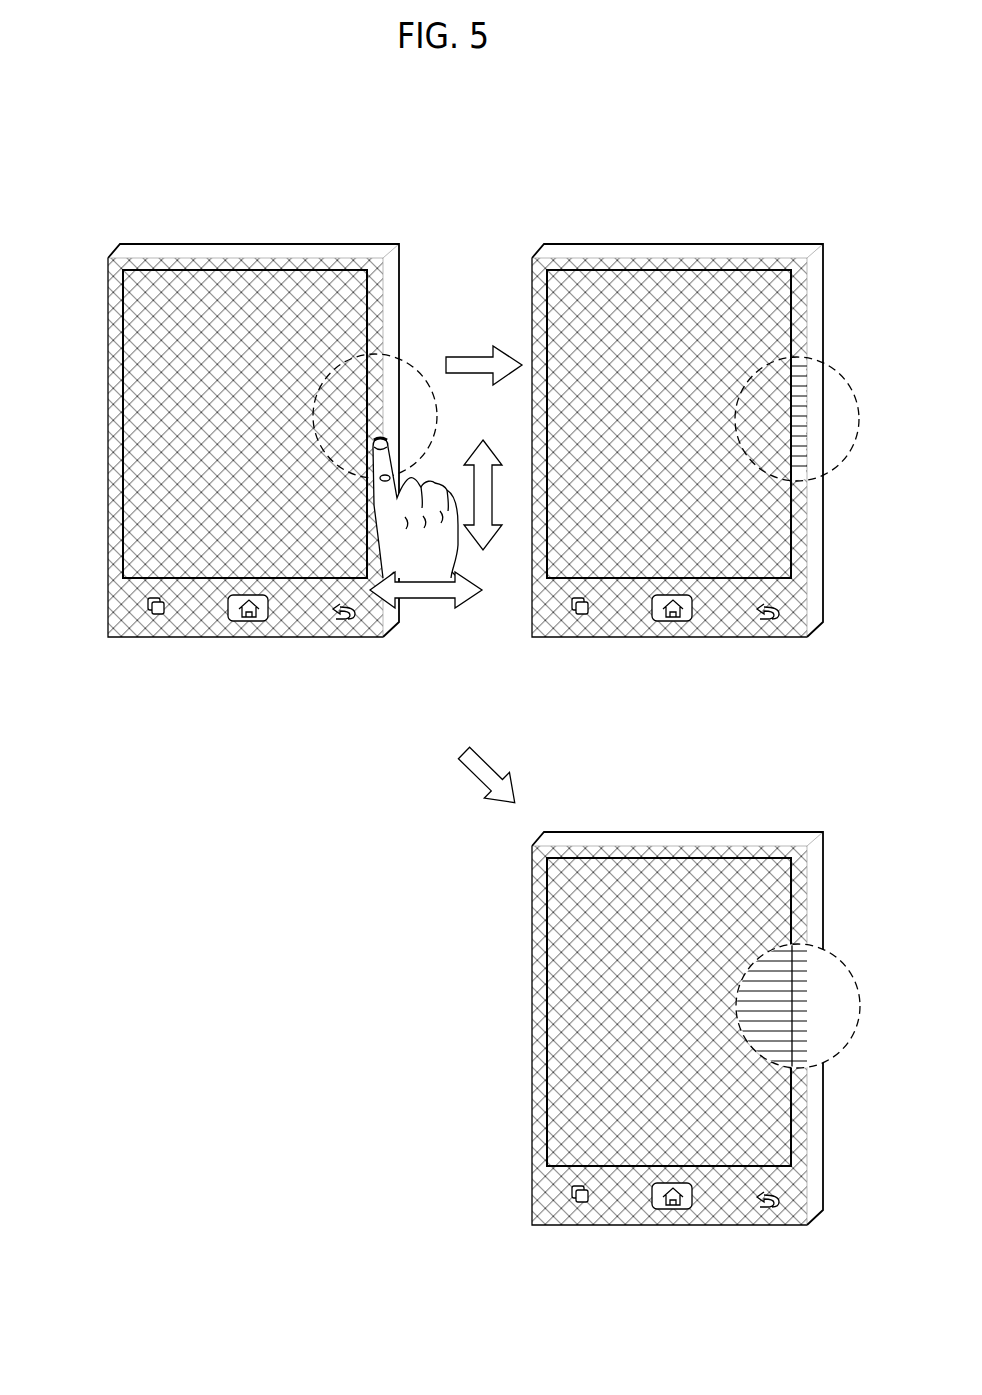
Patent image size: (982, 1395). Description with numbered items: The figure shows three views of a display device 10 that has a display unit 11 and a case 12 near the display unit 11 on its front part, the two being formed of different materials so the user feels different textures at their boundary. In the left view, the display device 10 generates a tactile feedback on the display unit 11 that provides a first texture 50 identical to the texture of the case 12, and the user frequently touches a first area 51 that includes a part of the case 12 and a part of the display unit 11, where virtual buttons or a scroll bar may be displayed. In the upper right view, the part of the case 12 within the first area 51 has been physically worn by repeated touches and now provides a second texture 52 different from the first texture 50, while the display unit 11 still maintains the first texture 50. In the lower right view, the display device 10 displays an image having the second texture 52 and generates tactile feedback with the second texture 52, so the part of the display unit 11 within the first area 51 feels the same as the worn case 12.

The display device 10 is at (221, 402).
The display unit 11 is at (133, 400).
The case 12 is at (115, 484).
The first texture 50 is at (370, 385).
The first area 51 is at (418, 374).
The second texture 52 is at (800, 398).